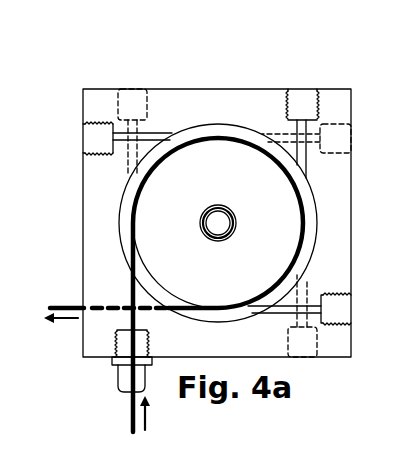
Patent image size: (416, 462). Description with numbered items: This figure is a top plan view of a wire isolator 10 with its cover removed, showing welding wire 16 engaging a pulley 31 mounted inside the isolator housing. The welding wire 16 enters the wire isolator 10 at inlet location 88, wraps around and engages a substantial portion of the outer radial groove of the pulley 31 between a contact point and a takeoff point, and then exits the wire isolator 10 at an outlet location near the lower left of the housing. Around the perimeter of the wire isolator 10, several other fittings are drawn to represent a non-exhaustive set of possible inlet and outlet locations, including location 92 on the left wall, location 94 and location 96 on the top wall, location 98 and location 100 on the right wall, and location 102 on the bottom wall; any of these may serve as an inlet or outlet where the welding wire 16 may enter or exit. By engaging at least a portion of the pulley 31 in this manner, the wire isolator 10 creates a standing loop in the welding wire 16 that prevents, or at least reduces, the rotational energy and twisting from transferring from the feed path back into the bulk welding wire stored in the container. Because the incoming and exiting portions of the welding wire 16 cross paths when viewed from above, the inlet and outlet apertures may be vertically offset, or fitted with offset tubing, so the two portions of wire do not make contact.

The wire isolator 10 is at (362, 77).
The welding wire 16 is at (64, 308).
The pulley 31 is at (291, 246).
The inlet location 88 is at (120, 364).
The location 92 is at (83, 141).
The location 94 is at (138, 89).
The location 96 is at (297, 89).
The location 98 is at (351, 140).
The location 100 is at (351, 310).
The location 102 is at (302, 357).